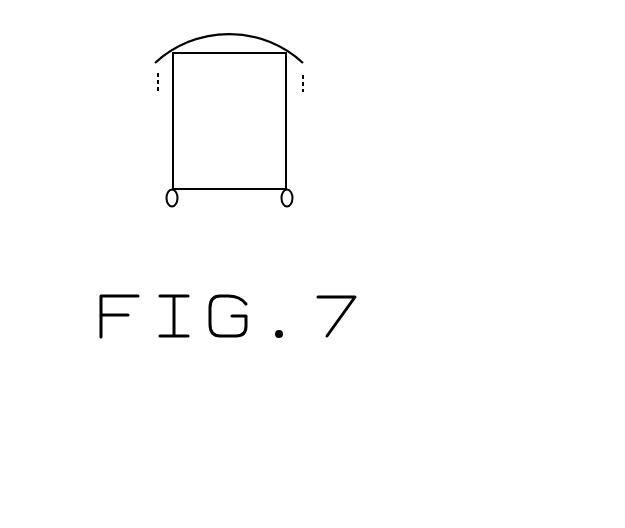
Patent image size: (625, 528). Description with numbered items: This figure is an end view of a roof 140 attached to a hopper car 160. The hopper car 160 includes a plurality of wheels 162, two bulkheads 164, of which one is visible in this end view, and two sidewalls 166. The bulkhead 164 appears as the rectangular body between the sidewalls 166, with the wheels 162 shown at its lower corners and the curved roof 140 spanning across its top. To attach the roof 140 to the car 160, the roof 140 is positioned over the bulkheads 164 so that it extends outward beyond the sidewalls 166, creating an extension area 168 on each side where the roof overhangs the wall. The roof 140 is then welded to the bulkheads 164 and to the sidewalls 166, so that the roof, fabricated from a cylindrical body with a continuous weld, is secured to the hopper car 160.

The roof 140 is at (295, 54).
The hopper car 160 is at (422, 82).
The wheels 162 is at (165, 206).
The bulkheads 164 is at (229, 121).
The sidewalls 166 is at (137, 97).
The extension area 168 is at (166, 92).